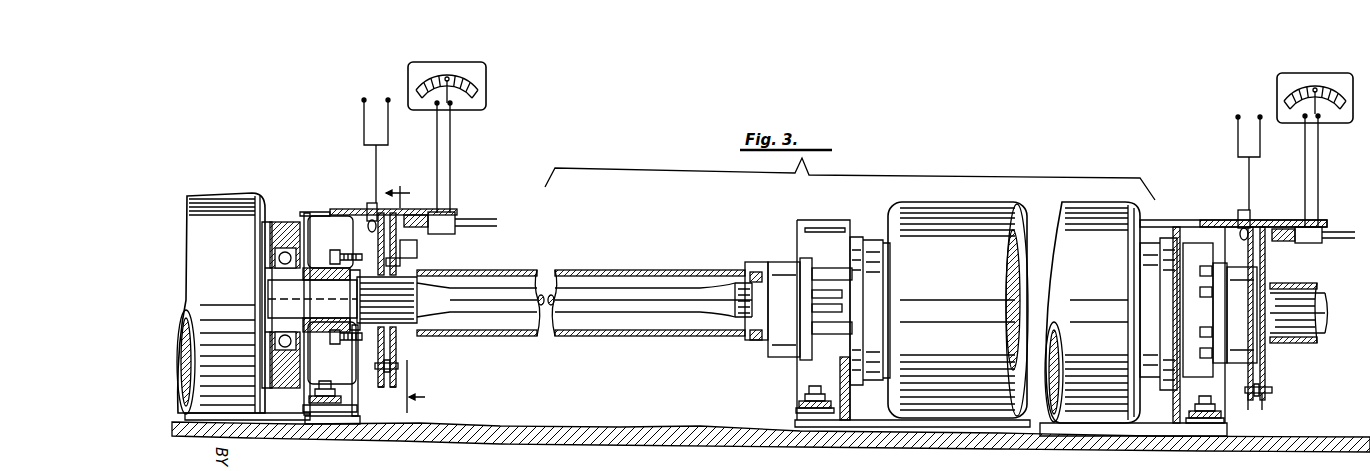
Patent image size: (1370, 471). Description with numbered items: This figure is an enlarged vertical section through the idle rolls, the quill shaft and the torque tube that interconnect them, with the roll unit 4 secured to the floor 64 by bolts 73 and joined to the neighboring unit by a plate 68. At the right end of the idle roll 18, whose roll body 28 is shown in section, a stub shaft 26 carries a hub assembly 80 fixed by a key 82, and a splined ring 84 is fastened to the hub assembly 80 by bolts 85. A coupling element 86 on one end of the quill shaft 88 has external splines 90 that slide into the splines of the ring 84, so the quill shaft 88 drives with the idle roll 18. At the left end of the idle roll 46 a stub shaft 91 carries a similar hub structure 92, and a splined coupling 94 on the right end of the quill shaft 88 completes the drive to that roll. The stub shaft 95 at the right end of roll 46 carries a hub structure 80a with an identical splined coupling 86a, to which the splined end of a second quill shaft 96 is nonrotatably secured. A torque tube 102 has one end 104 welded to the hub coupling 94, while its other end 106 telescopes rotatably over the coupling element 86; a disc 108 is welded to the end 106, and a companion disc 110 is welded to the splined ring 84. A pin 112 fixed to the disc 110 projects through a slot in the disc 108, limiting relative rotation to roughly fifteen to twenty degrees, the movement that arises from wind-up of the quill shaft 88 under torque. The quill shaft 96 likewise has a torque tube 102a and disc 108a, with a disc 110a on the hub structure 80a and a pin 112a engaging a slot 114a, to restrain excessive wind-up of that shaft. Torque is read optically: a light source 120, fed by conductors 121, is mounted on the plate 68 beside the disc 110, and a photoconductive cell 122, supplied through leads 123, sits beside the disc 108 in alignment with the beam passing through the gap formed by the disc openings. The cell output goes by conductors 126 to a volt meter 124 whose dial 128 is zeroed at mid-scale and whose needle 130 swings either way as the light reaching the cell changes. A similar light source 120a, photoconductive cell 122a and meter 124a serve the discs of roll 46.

The roll unit 4 is at (410, 294).
The idle roll 18 is at (205, 196).
The stub shaft 26 is at (325, 315).
The wheel hub 28 is at (262, 230).
The idle roll 46 is at (1058, 212).
The floor 64 is at (464, 442).
The plate 68 is at (452, 210).
The bolts 73 is at (317, 392).
The hub assembly 80 is at (342, 236).
The hub structure 80a is at (1218, 262).
The key 82 is at (335, 298).
The splined ring 84 is at (360, 335).
The bolts 85 is at (332, 257).
The coupling element 86 is at (400, 330).
The splined coupling 86a is at (1266, 366).
The quill shaft 88 is at (580, 292).
The external splines 90 is at (400, 256).
The stub shaft 91 is at (802, 302).
The hub structure 92 is at (833, 275).
The splined coupling 94 is at (765, 337).
The stub shaft 95 is at (1197, 295).
The quill shaft 96 is at (1313, 312).
The torque tube 102 is at (578, 337).
The torque tube 102a is at (1303, 342).
The end of torque tube 104 is at (762, 278).
The end of torque tube 106 is at (400, 263).
The disc 108 is at (396, 378).
The disc 108a is at (1270, 388).
The disc 110 is at (383, 369).
The disc 110a is at (1249, 396).
The pin 112 is at (398, 366).
The pin 112a is at (1270, 393).
The slot 114a is at (1266, 408).
The light source 120 is at (370, 205).
The light source 120a is at (1243, 212).
The conductors 121 is at (386, 98).
The photoconductive cell 122 is at (455, 231).
The photoconductive cell 122a is at (1308, 243).
The leads 123 is at (497, 219).
The volt meter 124 is at (461, 71).
The meter 124a is at (1326, 75).
The conductors 126 is at (452, 142).
The dial 128 is at (448, 68).
The needle 130 is at (434, 72).